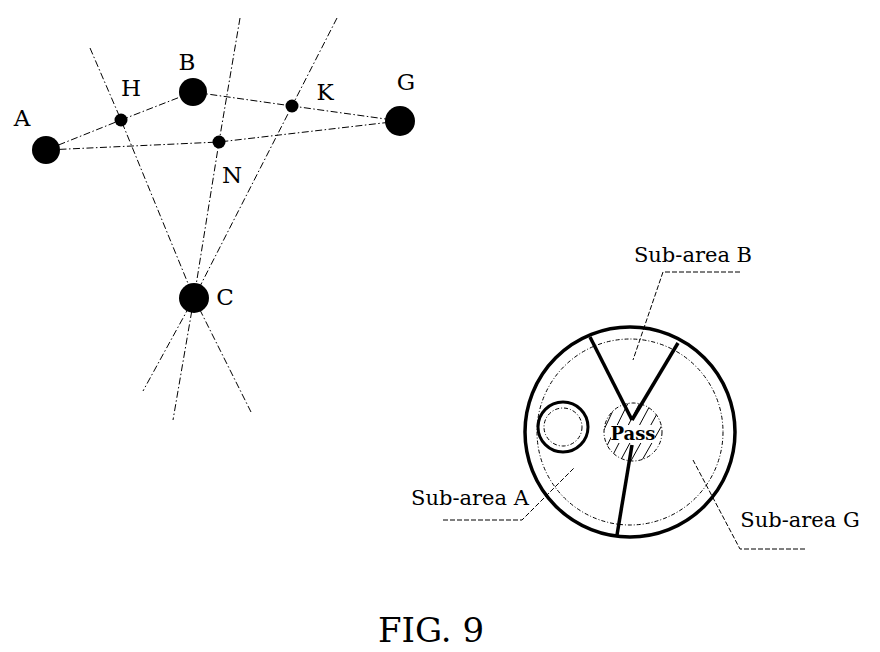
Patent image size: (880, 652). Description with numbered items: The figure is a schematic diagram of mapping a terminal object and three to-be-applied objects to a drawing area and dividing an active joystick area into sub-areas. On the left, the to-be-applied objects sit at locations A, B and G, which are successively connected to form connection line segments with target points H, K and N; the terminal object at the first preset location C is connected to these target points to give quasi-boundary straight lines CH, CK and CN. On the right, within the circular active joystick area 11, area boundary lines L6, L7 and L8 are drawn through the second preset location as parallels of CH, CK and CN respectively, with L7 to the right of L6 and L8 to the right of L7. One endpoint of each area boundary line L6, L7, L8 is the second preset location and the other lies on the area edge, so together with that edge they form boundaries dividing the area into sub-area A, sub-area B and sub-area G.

The circular area / field of view 11 is at (665, 432).
The area boundary line L6 is at (596, 365).
The area boundary line L7 is at (681, 365).
The area boundary line L8 is at (615, 513).